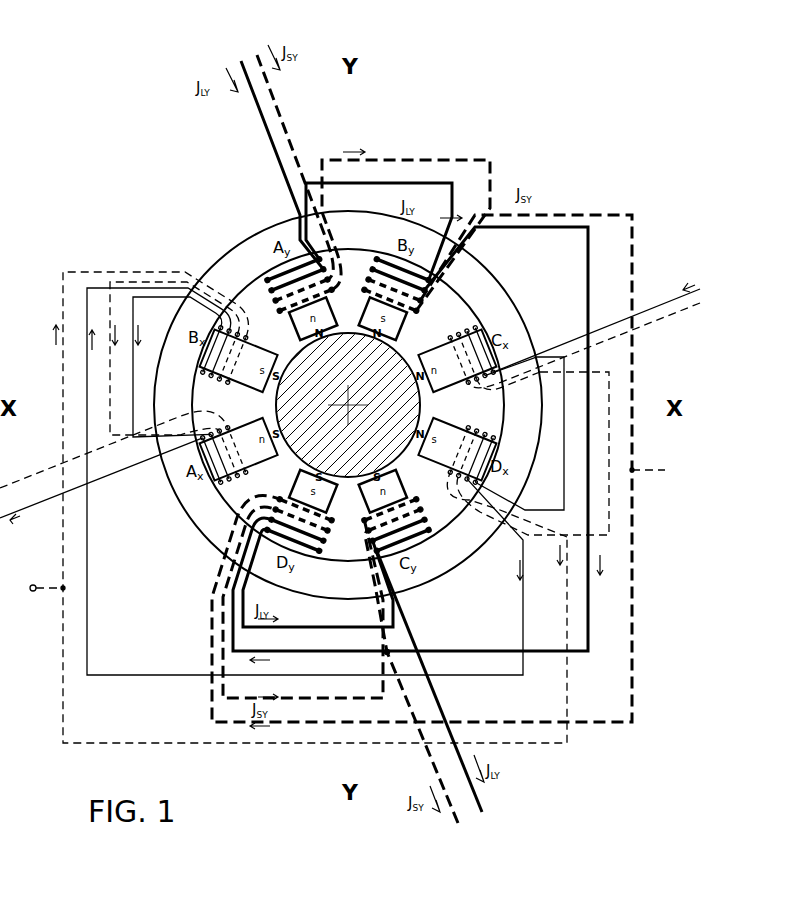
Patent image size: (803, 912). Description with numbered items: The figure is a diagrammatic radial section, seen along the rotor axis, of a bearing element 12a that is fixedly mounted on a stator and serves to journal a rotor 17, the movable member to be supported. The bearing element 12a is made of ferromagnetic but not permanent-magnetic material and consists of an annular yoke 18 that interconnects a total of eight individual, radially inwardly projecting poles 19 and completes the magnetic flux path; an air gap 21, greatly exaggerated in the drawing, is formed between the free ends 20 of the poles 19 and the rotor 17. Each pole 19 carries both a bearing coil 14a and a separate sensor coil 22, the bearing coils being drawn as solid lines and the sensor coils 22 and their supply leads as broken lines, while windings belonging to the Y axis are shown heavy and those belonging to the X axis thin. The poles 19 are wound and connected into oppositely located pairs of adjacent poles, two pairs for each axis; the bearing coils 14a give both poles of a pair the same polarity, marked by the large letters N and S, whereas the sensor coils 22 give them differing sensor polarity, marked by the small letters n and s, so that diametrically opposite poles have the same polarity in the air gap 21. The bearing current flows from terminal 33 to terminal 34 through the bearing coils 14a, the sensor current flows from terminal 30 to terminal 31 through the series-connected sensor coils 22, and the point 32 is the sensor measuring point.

The bearing element 12a is at (508, 288).
The bearing coil 14a is at (437, 530).
The rotor 17 is at (402, 350).
The yoke 18 is at (522, 455).
The poles 19 is at (458, 430).
The free ends of the poles 20 is at (460, 388).
The air gap 21 is at (432, 457).
The sensor coil 22 is at (448, 528).
The terminal 30 is at (257, 52).
The terminal 31 is at (458, 826).
The sensor measuring point 32 is at (667, 462).
The terminal 33 is at (239, 59).
The terminal 34 is at (485, 814).